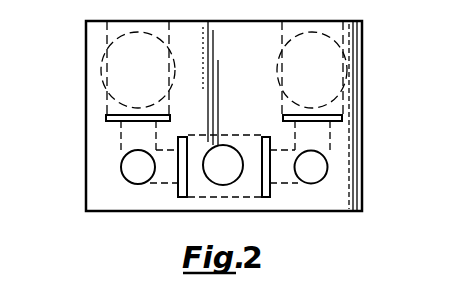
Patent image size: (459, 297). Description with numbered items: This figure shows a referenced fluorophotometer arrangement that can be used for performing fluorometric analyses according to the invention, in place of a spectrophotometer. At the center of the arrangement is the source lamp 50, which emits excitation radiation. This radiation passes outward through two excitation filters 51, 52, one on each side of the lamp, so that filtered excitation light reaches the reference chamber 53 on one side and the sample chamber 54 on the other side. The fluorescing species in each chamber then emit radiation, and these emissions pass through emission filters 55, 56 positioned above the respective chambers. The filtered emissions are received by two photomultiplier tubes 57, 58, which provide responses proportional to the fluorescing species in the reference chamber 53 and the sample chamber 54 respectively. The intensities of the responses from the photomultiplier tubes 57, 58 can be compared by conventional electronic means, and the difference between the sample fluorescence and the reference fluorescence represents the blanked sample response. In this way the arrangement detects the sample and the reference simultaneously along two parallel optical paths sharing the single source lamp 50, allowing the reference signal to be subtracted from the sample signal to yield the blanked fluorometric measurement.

The source lamp 50 is at (231, 153).
The excitation filter 51 is at (178, 191).
The excitation filter 52 is at (270, 192).
The reference chamber 53 is at (121, 168).
The sample chamber 54 is at (327, 168).
The emission filter 55 is at (106, 118).
The emission filter 56 is at (342, 118).
The photomultiplier tube 57 is at (122, 73).
The photomultiplier tube 58 is at (338, 72).